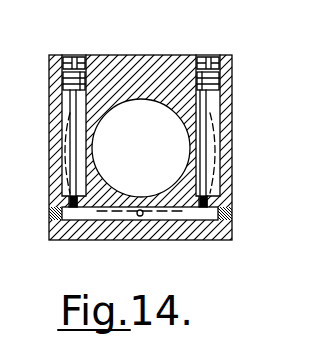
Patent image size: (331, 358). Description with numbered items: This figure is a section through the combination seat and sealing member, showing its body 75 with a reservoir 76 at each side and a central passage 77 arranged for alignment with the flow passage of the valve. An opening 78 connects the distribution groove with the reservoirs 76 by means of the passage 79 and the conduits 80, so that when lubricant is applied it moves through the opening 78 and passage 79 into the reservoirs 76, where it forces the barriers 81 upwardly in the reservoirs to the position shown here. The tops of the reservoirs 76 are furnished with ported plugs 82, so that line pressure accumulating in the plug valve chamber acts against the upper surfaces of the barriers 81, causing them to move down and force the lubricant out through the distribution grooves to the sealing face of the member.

The body 75 is at (132, 62).
The reservoirs 76 is at (77, 137).
The passage 77 is at (103, 106).
The opening 78 is at (138, 215).
The passage 79 is at (200, 215).
The conduits 80 is at (72, 202).
The barriers 81 is at (68, 88).
The ported plugs 82 is at (75, 70).